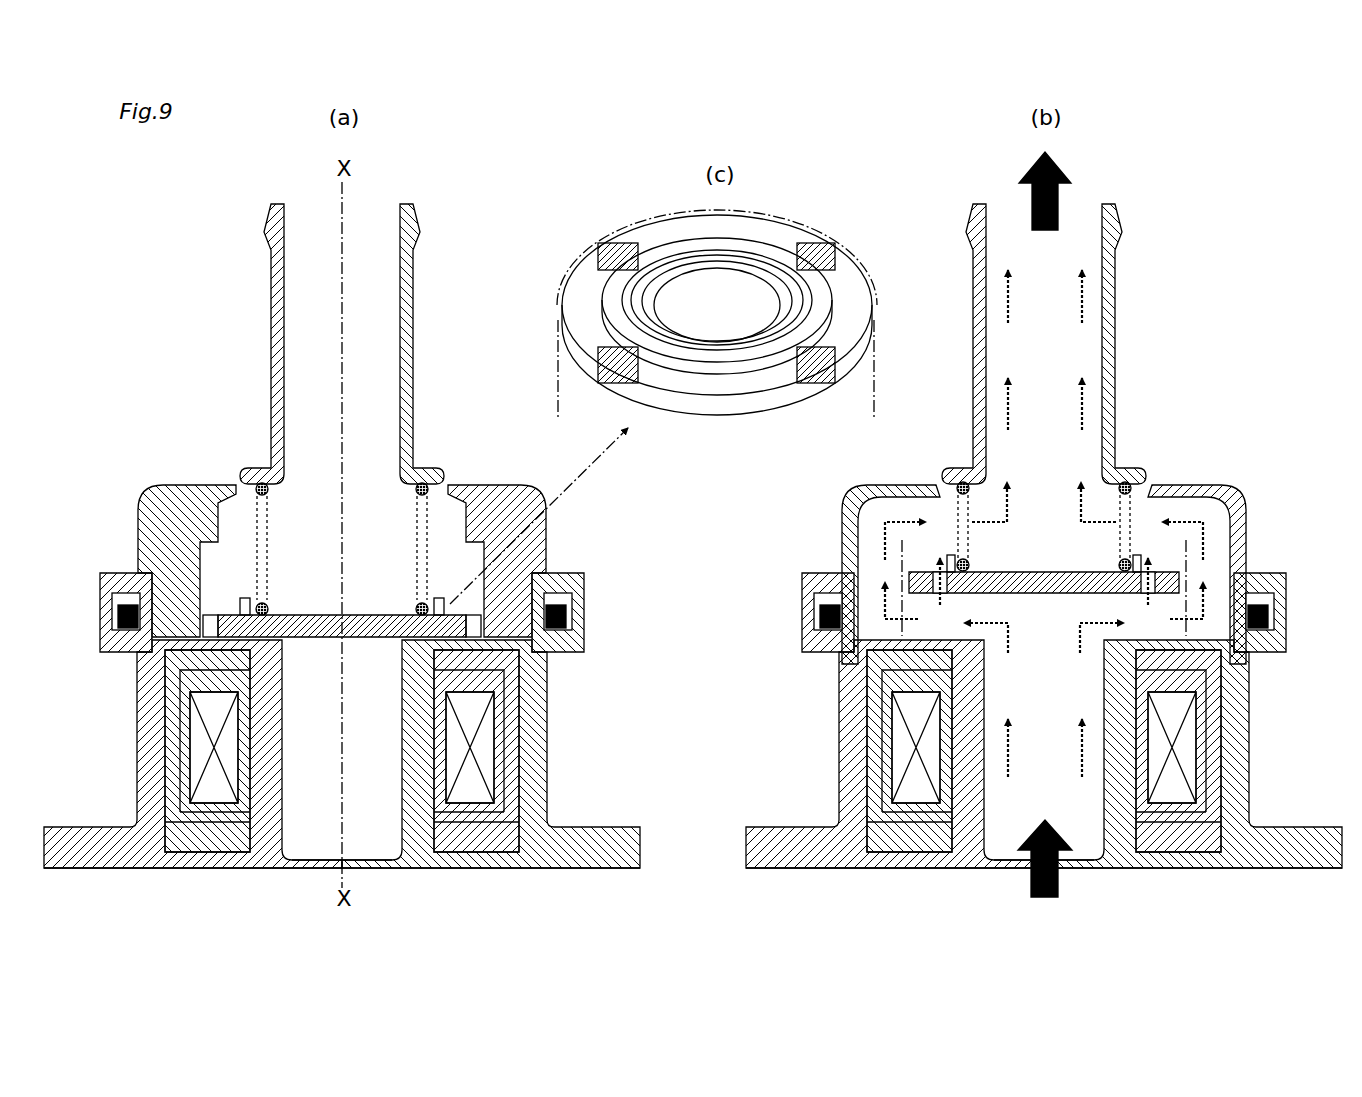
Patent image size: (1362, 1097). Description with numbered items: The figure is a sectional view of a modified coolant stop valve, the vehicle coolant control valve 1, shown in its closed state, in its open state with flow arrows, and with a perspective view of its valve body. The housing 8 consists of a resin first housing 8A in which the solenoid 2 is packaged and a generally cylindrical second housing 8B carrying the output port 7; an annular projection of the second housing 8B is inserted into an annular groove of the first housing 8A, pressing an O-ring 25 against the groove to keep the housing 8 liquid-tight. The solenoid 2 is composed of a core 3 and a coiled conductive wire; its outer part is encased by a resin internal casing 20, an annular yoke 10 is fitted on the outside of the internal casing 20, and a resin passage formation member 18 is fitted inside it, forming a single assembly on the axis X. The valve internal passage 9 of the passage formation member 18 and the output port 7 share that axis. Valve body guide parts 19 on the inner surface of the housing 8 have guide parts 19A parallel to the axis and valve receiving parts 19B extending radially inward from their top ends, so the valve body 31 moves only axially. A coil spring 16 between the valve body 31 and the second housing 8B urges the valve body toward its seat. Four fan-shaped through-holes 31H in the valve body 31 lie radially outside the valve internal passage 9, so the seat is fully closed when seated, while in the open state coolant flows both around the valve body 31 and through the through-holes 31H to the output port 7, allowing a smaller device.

The vehicle coolant control valve 1 is at (242, 398).
The solenoid 2 is at (204, 752).
The core 3 is at (460, 750).
The output port 7 is at (413, 356).
The housing 8 is at (583, 648).
The first housing 8A is at (605, 828).
The second housing 8B is at (488, 485).
The valve internal passage 9 is at (320, 784).
The yoke 10 is at (522, 690).
The coil spring 16 is at (415, 490).
The passage formation member 18 is at (380, 856).
The valve body guide parts 19 is at (150, 520).
The guide parts 19A is at (236, 486).
The valve receiving parts 19B is at (470, 558).
The internal casing 20 is at (500, 750).
The O-ring 25 is at (116, 616).
The valve body 31 is at (360, 640).
The through-holes 31H is at (242, 604).